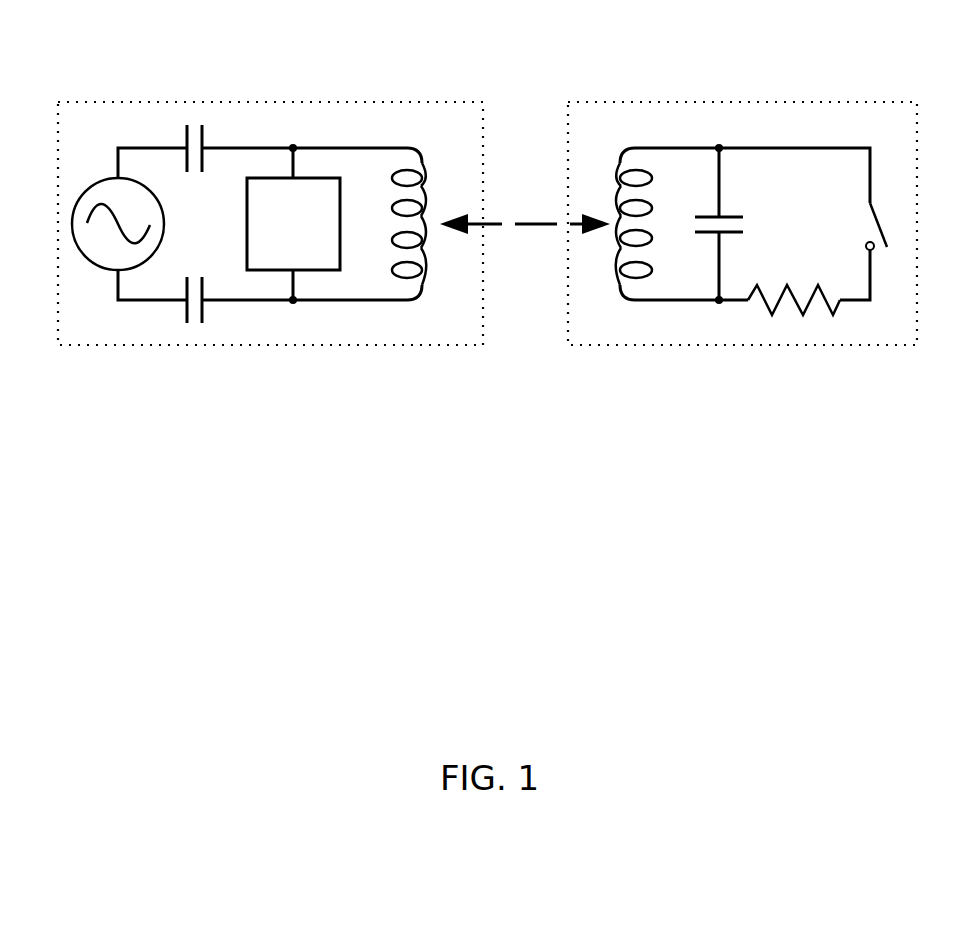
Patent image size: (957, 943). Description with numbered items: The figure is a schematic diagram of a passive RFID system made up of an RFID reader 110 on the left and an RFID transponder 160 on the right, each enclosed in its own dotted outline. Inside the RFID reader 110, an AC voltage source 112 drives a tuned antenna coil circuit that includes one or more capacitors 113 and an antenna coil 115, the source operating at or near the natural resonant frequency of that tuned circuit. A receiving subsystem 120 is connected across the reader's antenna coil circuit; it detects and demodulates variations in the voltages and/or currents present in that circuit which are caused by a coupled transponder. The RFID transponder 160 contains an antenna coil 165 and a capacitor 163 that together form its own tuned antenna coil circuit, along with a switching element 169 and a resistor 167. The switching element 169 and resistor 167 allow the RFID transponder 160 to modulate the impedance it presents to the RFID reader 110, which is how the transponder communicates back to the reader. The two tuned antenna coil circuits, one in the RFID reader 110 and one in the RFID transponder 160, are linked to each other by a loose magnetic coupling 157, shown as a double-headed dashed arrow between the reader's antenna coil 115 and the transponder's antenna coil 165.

The RFID reader 110 is at (225, 362).
The AC voltage source 112 is at (95, 170).
The capacitors 113 is at (202, 262).
The antenna coil 115 is at (408, 315).
The receiving subsystem 120 is at (323, 172).
The loose magnetic coupling 157 is at (535, 240).
The RFID transponder 160 is at (697, 362).
The capacitor 163 is at (750, 225).
The antenna coil 165 is at (635, 133).
The resistor 167 is at (812, 323).
The switching element 169 is at (893, 217).